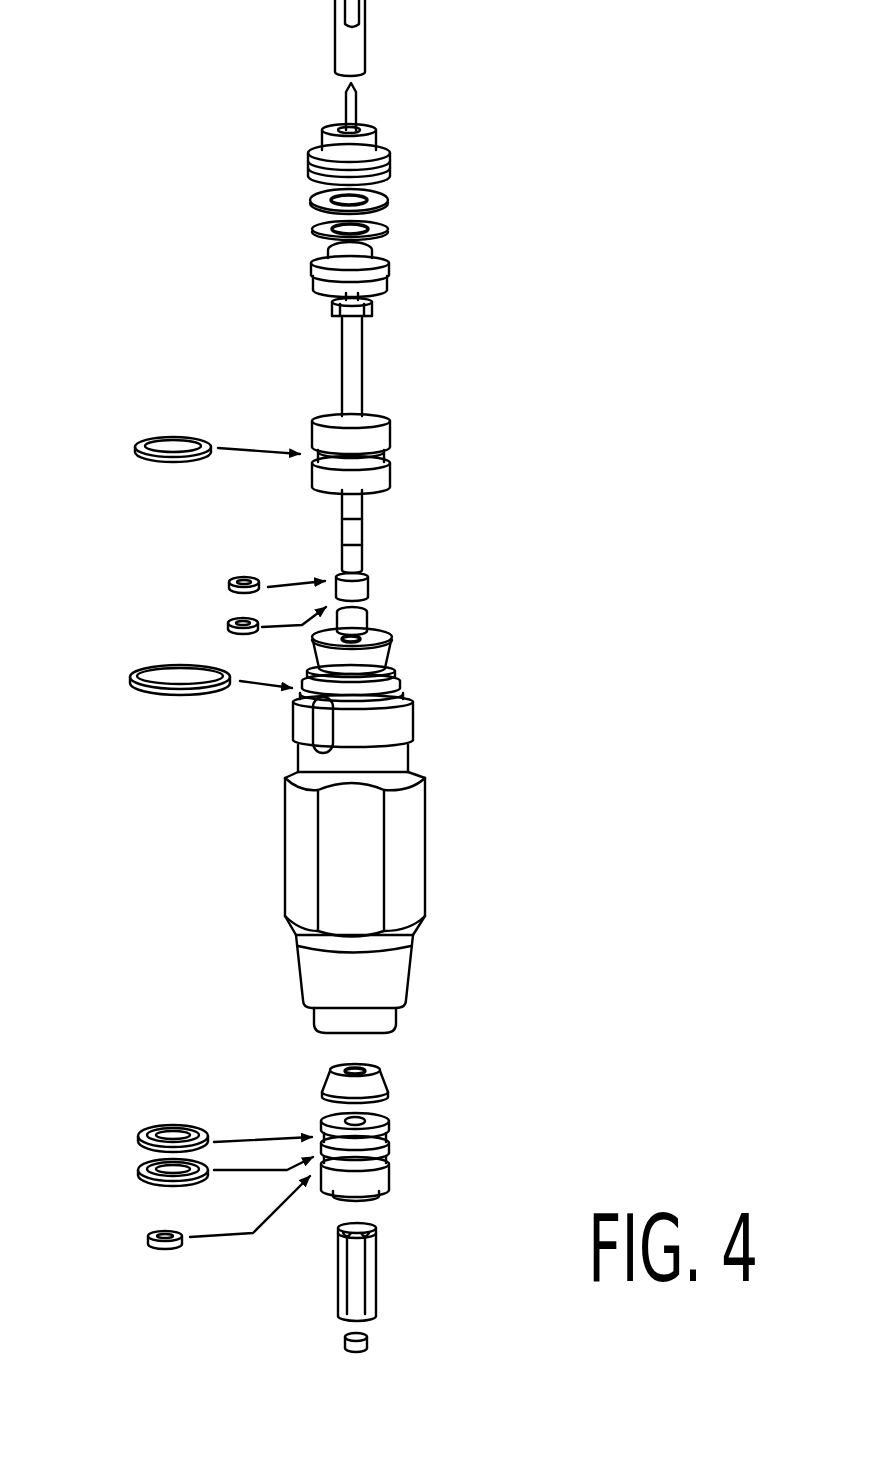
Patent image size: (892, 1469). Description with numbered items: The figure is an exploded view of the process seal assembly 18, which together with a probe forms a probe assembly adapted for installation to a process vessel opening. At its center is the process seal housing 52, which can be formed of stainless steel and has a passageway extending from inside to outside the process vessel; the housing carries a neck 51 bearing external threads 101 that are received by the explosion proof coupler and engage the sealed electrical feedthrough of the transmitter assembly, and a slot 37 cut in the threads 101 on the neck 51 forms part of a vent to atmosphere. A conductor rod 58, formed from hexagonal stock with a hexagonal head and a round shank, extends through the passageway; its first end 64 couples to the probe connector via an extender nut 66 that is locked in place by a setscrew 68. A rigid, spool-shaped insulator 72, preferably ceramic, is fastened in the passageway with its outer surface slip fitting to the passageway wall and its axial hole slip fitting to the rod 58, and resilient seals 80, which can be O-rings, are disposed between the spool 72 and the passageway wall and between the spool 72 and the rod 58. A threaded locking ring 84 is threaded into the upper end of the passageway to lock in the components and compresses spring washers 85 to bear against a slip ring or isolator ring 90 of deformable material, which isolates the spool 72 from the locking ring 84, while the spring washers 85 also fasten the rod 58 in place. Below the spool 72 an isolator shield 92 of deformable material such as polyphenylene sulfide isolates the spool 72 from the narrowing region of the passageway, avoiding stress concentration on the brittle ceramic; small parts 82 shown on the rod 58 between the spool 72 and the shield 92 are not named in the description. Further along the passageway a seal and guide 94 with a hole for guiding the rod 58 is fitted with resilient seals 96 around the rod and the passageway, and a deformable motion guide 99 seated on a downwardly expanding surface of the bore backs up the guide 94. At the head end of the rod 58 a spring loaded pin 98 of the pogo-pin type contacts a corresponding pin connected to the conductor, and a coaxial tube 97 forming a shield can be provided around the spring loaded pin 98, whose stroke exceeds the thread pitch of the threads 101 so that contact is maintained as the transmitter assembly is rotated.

The process seal assembly 18 is at (520, 126).
The coaxial tube 97 is at (338, 40).
The spring loaded pin 98 is at (345, 100).
The threaded locking ring 84 is at (318, 150).
The spring washers 85 is at (320, 232).
The isolator ring 90 is at (318, 264).
The conductor rod 58 is at (368, 308).
The spool-shaped insulator 72 is at (370, 422).
The resilient seals 80 is at (138, 440).
The first end 64 is at (366, 554).
The spacer 82 is at (360, 622).
The isolator shield 92 is at (376, 640).
The neck 51 is at (394, 695).
The external threads 101 is at (400, 720).
The slot 37 is at (312, 726).
The process seal housing 52 is at (302, 842).
The deformable motion guide 99 is at (330, 1084).
The seal and guide 94 is at (378, 1121).
The resilient seals 96 is at (138, 1170).
The extender nut 66 is at (372, 1255).
The setscrew 68 is at (366, 1342).